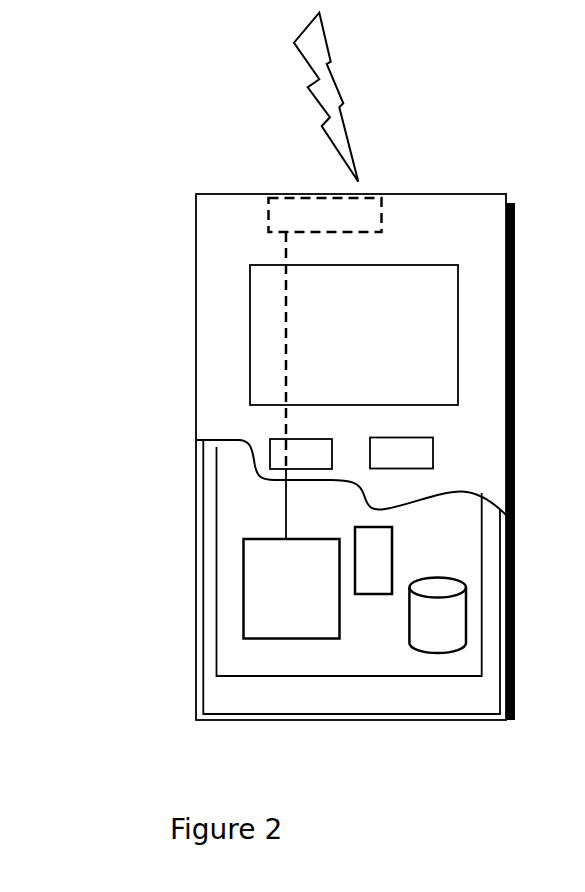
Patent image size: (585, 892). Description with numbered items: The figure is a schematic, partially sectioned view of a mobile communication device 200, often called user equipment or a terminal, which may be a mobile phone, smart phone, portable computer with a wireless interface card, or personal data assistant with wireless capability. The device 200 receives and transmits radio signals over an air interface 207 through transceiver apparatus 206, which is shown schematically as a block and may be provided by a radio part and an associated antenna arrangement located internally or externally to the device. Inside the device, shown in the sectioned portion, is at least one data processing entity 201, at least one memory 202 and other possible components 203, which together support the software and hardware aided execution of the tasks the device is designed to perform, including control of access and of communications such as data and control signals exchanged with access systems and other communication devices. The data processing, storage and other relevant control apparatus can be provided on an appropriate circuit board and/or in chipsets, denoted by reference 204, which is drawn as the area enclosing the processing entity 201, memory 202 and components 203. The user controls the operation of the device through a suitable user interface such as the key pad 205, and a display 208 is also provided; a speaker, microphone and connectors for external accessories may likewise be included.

The mobile communication device 200 is at (196, 240).
The data processing entity 201 is at (250, 572).
The memory 202 is at (430, 630).
The other possible components 203 is at (373, 543).
The circuit board and/or chipsets 204 is at (243, 658).
The key pad 205 is at (275, 454).
The transceiver apparatus 206 is at (372, 208).
The air interface 207 is at (363, 117).
The display 208 is at (268, 320).